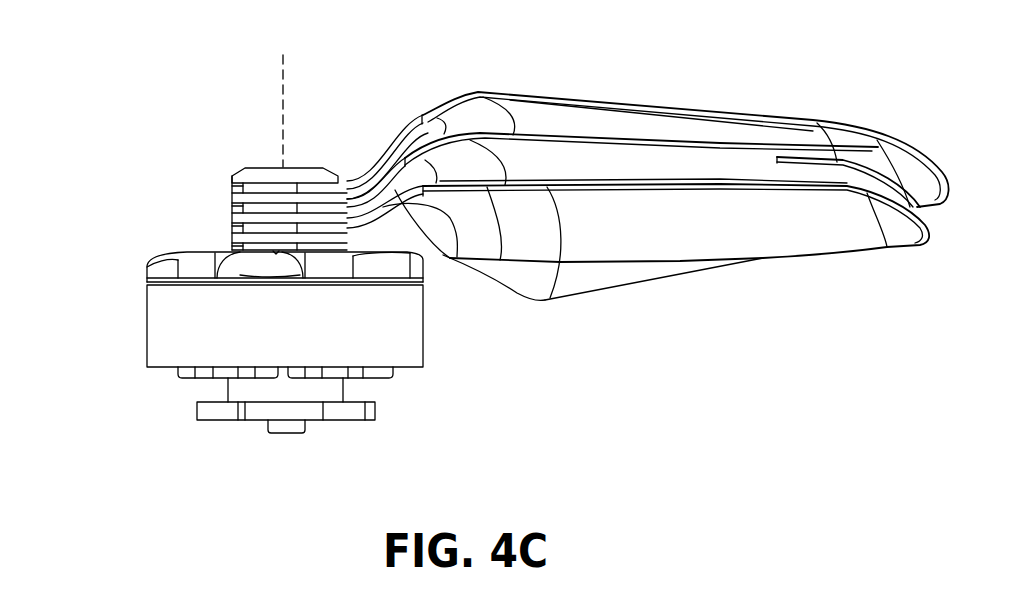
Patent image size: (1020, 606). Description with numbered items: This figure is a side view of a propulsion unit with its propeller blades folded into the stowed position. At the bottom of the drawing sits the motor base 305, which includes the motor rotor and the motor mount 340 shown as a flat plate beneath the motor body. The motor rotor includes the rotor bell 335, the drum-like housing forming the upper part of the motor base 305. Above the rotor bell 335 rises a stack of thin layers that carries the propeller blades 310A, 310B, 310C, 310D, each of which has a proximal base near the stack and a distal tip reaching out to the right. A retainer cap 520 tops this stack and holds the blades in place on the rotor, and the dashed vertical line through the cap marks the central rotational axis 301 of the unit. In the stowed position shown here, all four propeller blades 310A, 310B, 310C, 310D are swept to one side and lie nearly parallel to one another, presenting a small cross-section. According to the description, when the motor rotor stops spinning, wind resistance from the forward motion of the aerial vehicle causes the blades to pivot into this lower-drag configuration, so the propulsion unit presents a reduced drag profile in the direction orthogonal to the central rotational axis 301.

The central rotational axis 301 is at (283, 78).
The motor base 305 is at (137, 410).
The propeller blade 310A is at (620, 103).
The propeller blade 310B is at (860, 157).
The propeller blade 310C is at (573, 176).
The propeller blade 310D is at (677, 236).
The rotor bell 335 is at (170, 260).
The motor mount 340 is at (343, 415).
The retainer cap 520 is at (270, 172).